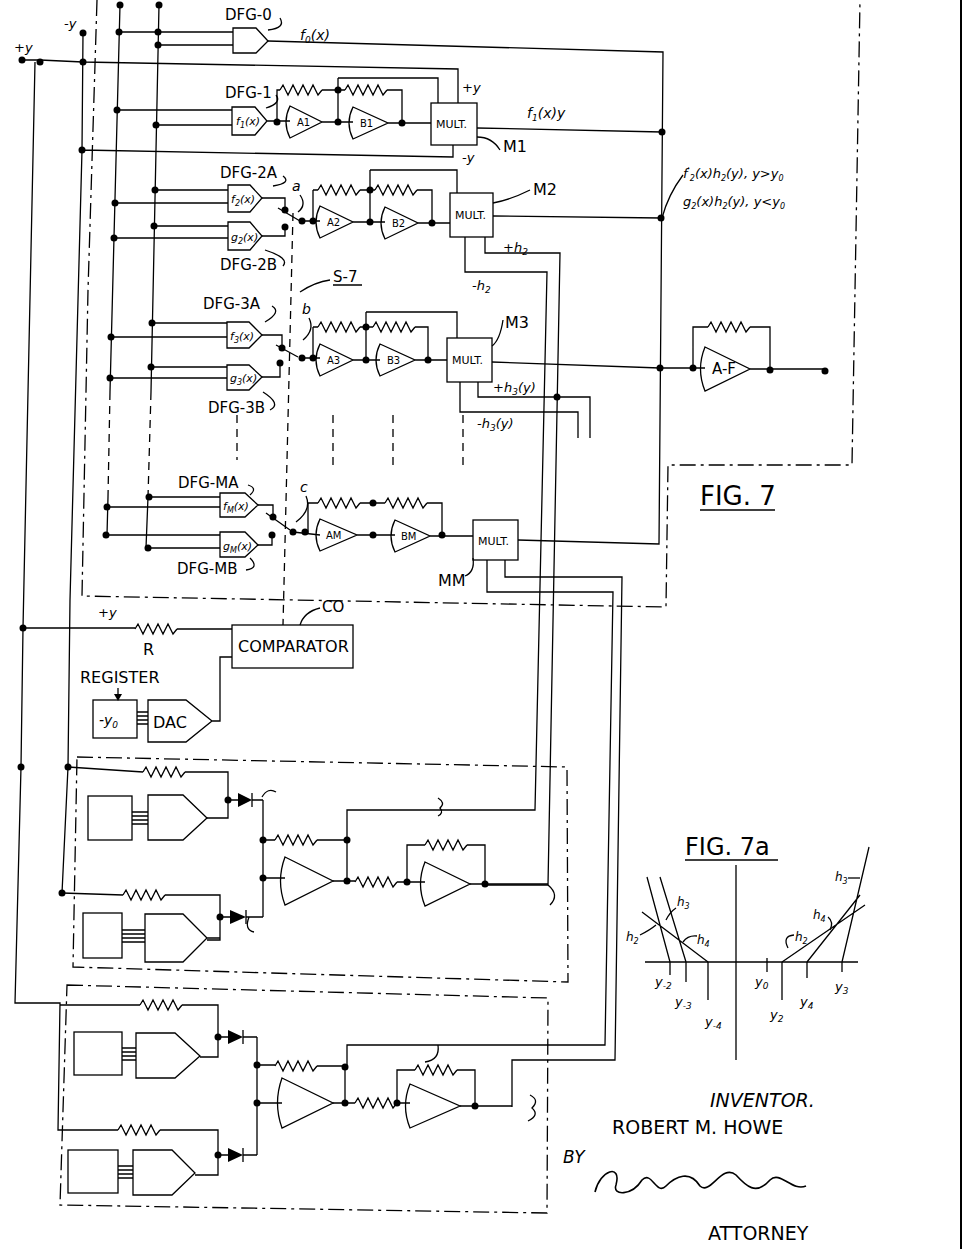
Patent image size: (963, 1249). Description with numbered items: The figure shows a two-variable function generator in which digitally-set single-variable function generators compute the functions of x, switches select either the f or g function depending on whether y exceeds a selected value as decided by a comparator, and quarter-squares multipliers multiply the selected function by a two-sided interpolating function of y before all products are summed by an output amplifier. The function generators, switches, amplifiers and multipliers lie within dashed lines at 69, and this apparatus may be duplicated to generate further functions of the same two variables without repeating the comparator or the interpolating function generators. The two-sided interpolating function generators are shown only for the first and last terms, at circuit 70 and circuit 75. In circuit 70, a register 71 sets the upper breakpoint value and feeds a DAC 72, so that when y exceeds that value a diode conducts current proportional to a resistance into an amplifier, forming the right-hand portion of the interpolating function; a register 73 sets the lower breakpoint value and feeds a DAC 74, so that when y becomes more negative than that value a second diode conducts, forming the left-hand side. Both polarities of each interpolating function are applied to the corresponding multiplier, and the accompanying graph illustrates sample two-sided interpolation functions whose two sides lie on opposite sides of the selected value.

The apparatus within dashed lines 69 is at (438, 598).
The two-sided interpolating function generating circuit 70 is at (343, 763).
The register 71 is at (120, 841).
The DAC 72 is at (185, 841).
The register 73 is at (112, 914).
The DAC 74 is at (167, 915).
The last two-sided interpolating function generating circuit 75 is at (355, 1212).